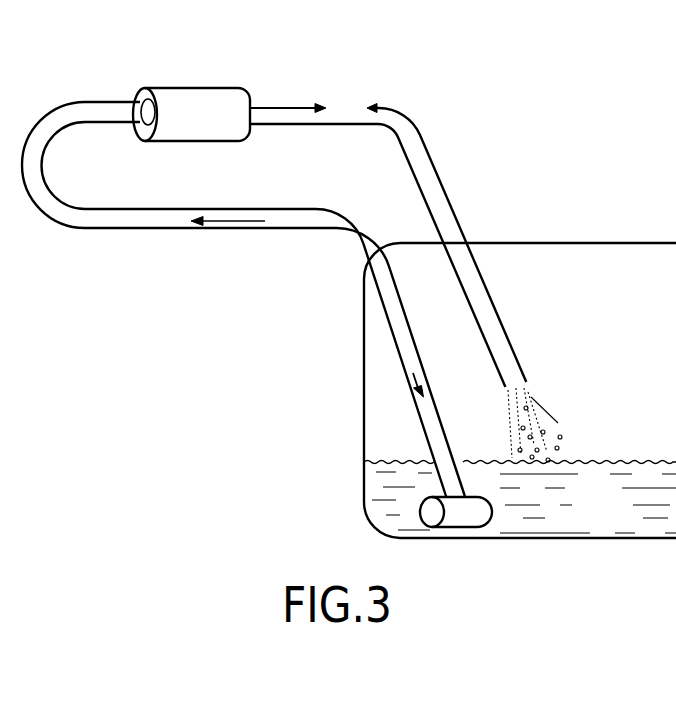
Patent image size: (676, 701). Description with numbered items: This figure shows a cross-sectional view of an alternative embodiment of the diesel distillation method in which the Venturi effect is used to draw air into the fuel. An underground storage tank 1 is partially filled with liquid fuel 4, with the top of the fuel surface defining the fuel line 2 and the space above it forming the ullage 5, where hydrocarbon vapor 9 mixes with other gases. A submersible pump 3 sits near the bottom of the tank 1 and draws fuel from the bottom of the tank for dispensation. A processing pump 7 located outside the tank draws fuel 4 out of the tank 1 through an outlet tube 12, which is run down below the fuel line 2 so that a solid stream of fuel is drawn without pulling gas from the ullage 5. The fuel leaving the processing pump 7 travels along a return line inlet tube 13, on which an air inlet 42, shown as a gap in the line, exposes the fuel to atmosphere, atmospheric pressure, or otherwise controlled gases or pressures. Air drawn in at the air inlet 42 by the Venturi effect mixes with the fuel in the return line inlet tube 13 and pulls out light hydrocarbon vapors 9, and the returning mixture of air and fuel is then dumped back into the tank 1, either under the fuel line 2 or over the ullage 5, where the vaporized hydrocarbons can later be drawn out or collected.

The storage tank 1 is at (364, 412).
The fuel line 2 is at (362, 475).
The submersible pump 3 is at (472, 515).
The liquid fuel 4 is at (583, 518).
The ullage 5 is at (628, 388).
The processing pump 7 is at (208, 87).
The hydrocarbon vapor 9 is at (538, 405).
The outlet tube 12 is at (155, 230).
The return line inlet tube 13 is at (443, 182).
The air inlet 42 is at (342, 110).